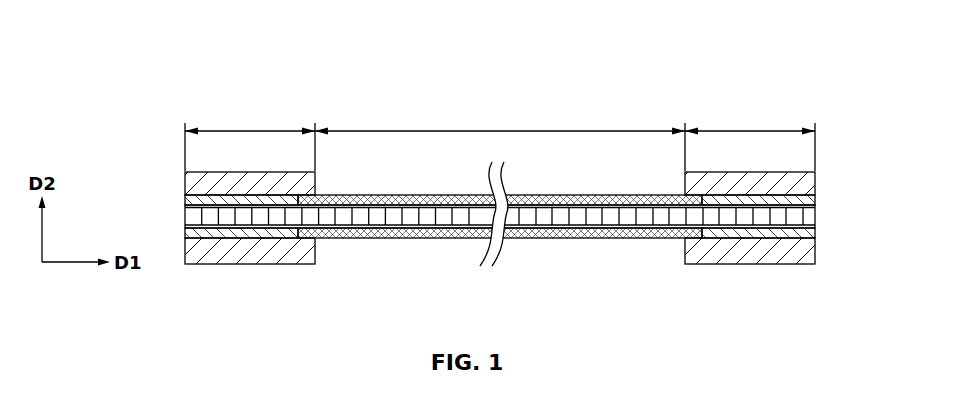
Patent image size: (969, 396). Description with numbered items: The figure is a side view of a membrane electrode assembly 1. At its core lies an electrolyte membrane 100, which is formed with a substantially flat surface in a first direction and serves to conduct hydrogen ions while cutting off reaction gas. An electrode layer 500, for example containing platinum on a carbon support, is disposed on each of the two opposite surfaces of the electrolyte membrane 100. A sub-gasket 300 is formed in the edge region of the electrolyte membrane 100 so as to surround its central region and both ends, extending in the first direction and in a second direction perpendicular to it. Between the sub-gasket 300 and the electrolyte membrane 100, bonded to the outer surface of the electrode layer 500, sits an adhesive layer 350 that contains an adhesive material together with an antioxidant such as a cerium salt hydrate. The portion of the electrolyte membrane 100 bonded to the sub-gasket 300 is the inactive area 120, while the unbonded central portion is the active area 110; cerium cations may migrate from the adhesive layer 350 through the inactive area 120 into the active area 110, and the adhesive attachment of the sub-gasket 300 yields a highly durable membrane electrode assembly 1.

The membrane electrode assembly 1 is at (176, 87).
The electrolyte membrane 100 is at (810, 217).
The active area 110 is at (500, 121).
The inactive area 120 is at (500, 139).
The sub-gasket 300 is at (758, 252).
The adhesive layer 350 is at (810, 233).
The electrode layer 500 is at (607, 238).